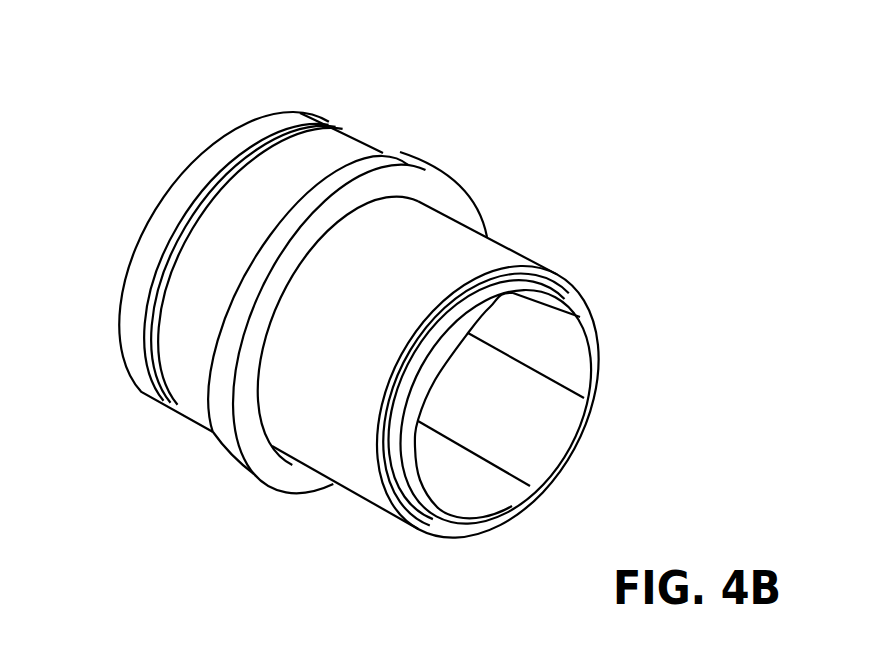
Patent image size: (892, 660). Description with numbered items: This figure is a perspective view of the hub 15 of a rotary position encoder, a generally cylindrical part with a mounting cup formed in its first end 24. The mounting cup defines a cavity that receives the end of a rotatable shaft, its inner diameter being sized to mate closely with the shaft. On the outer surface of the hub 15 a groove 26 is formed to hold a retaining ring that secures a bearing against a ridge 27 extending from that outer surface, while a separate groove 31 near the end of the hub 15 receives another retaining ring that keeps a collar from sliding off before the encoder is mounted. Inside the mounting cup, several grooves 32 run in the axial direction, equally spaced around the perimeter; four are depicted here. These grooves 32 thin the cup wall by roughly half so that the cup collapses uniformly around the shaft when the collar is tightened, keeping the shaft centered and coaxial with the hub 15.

The hub 15 is at (490, 240).
The first end 24 is at (641, 323).
The groove 26 is at (171, 239).
The ridge 27 is at (400, 153).
The groove 31 is at (376, 452).
The grooves 32 is at (550, 352).